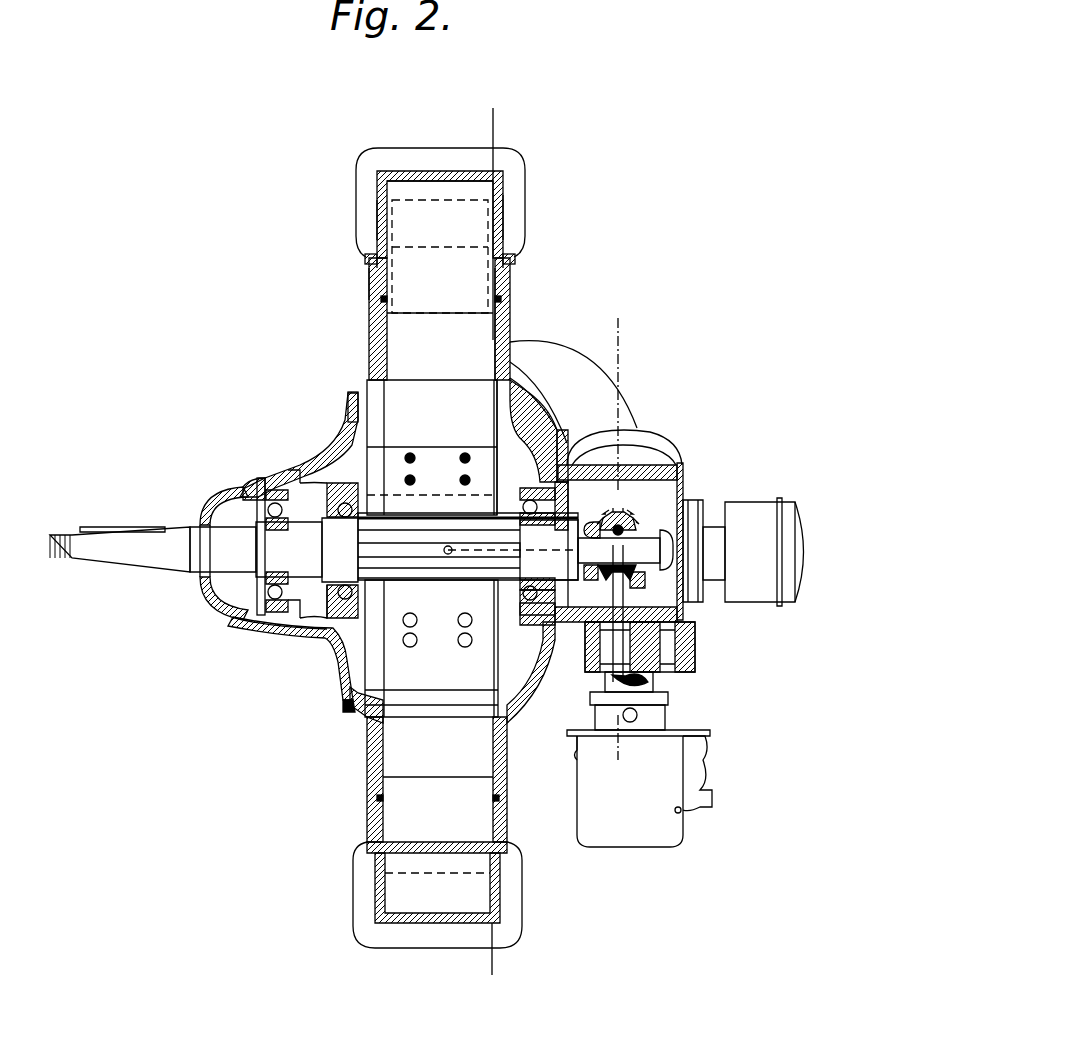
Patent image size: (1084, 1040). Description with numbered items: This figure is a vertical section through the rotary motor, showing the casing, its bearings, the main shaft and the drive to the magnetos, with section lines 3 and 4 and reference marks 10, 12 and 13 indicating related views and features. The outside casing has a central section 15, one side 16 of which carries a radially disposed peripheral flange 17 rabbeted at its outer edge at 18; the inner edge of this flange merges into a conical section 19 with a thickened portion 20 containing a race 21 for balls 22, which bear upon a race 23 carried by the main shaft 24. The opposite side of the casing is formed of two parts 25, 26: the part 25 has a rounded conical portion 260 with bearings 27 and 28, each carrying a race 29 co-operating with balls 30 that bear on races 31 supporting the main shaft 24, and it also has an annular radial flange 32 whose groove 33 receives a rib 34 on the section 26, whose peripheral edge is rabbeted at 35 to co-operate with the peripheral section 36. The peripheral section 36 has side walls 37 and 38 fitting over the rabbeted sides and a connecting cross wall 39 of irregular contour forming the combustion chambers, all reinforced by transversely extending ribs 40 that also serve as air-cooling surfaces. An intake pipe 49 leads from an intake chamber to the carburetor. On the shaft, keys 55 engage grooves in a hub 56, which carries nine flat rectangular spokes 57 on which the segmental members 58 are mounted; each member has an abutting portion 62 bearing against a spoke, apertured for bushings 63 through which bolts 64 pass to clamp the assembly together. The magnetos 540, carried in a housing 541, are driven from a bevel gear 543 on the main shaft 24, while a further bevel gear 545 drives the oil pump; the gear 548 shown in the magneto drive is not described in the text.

The section line 3- 3 is at (506, 115).
The section line 4- 4 is at (630, 320).
The crosshead piston block 10 is at (418, 436).
The cylinder liner 12 is at (512, 300).
The sealing ring 13 is at (381, 300).
The central section 15 is at (540, 408).
The side 16 is at (510, 330).
The peripheral flange 17 is at (512, 270).
The rabbet 18 is at (514, 255).
The conical section 19 is at (535, 400).
The thickened portion 20 is at (545, 482).
The race 21 is at (520, 515).
The balls 22 is at (555, 500).
The race 23 is at (545, 512).
The main shaft 24 is at (345, 545).
The casing part 25 is at (345, 418).
The casing section 26 is at (369, 352).
The bearing 27 is at (258, 478).
The bearing 28 is at (338, 472).
The race 29 is at (340, 500).
The balls 30 is at (338, 510).
The races 31 is at (335, 528).
The annular flange 32 is at (352, 392).
The groove 33 is at (348, 690).
The rib 34 is at (353, 712).
The rabbet 35 is at (369, 284).
The peripheral section 36 is at (470, 175).
The side wall 37 is at (377, 200).
The side wall 38 is at (503, 195).
The cross wall 39 is at (441, 172).
The ribs 40 is at (400, 158).
The intake pipe 49 is at (578, 380).
The keys 55 is at (522, 522).
The hub 56 is at (525, 612).
The spokes 57 is at (497, 458).
The segmental members 58 is at (500, 434).
The abutting portion 62 is at (639, 696).
The bushings 63 is at (462, 457).
The bolts 64 is at (460, 460).
The rounded conical portion 260 is at (270, 480).
The magnetos 540 is at (665, 447).
The housing 541 is at (690, 462).
The bevel gear 543 is at (610, 545).
The bevel gear 545 is at (628, 585).
The bevel gear 548 is at (628, 514).